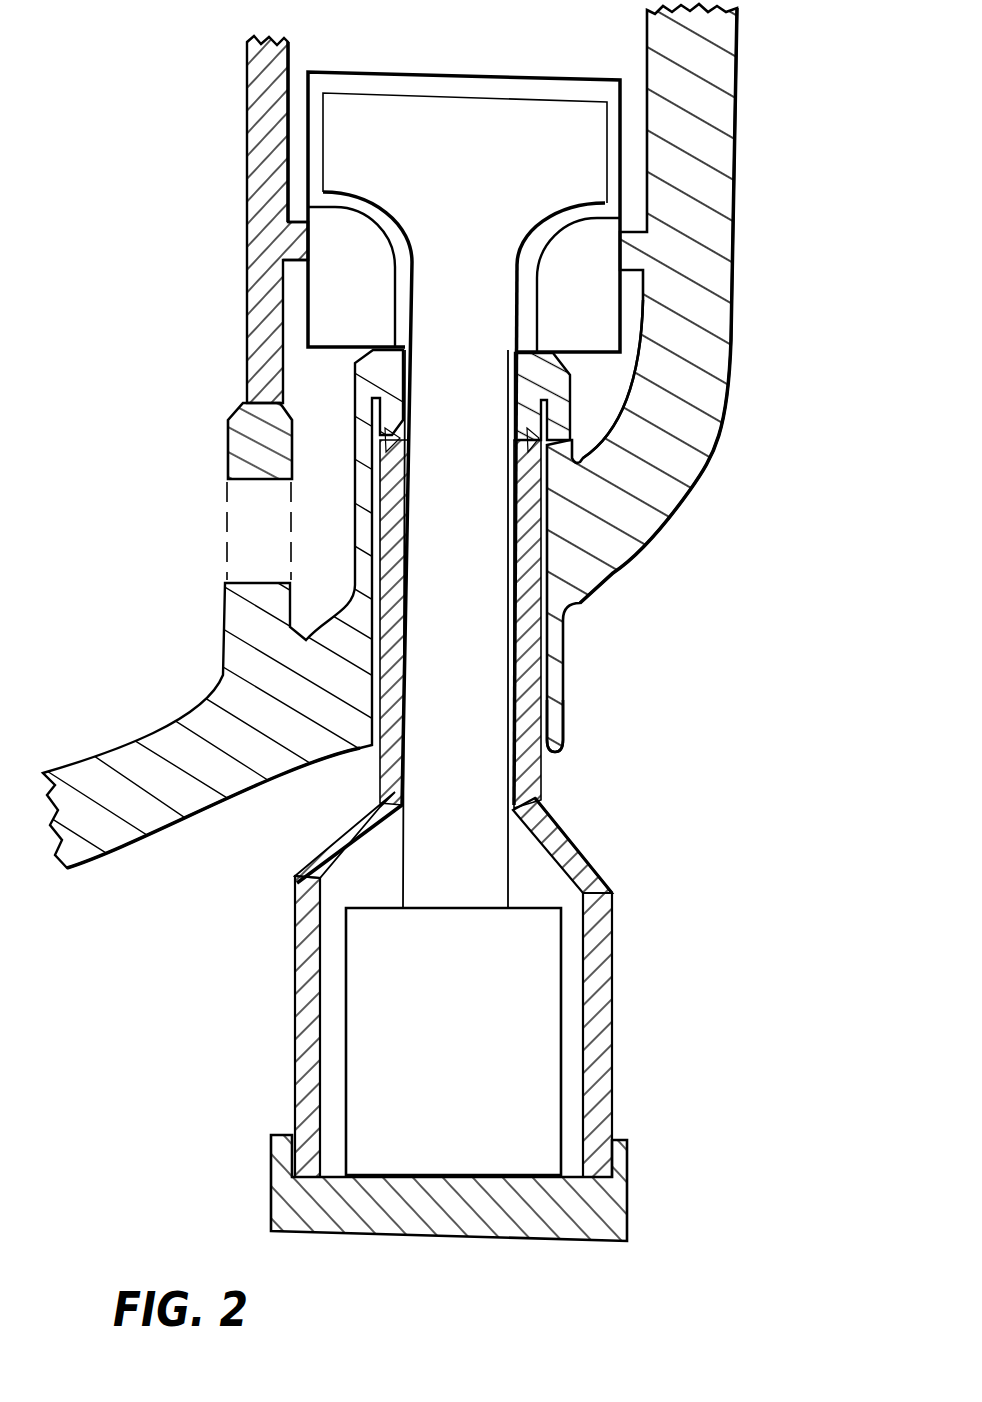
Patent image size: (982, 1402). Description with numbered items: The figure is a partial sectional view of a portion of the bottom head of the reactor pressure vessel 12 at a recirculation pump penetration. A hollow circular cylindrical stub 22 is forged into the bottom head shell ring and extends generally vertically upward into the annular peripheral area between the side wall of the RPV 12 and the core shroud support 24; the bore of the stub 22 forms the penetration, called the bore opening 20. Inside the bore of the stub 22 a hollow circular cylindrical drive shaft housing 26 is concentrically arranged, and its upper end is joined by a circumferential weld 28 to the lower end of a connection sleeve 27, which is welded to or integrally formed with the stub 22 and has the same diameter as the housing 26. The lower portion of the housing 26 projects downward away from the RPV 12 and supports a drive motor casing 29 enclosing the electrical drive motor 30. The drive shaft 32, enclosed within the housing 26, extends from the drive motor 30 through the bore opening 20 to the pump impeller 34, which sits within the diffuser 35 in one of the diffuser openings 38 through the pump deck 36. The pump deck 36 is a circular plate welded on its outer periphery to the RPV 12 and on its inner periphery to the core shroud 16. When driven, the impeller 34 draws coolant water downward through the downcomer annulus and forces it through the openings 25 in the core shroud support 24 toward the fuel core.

The reactor pressure vessel 12 is at (737, 45).
The core shroud 16 is at (247, 115).
The bore opening 20 is at (357, 766).
The stub 22 is at (355, 413).
The core shroud support 24 is at (232, 410).
The openings 25 is at (221, 531).
The drive shaft housing 26 is at (537, 763).
The connection sleeve 27 is at (540, 413).
The circumferential weld 28 is at (388, 438).
The drive motor casing 29 is at (612, 1053).
The drive motor 30 is at (553, 993).
The drive shaft 32 is at (487, 773).
The impeller 34 is at (517, 115).
The diffuser 35 is at (595, 317).
The pump deck 36 is at (305, 220).
The diffuser openings 38 is at (293, 283).